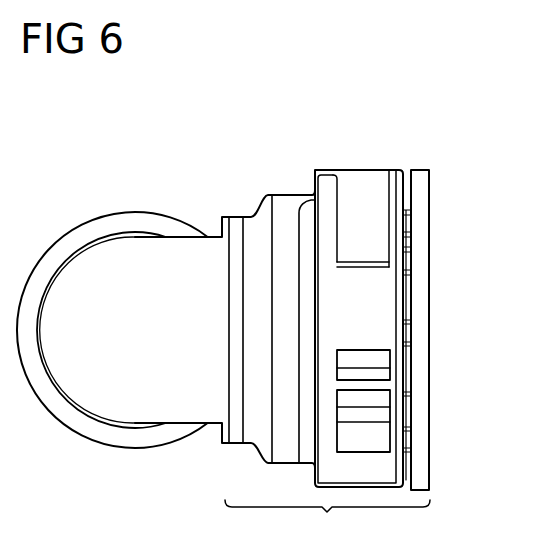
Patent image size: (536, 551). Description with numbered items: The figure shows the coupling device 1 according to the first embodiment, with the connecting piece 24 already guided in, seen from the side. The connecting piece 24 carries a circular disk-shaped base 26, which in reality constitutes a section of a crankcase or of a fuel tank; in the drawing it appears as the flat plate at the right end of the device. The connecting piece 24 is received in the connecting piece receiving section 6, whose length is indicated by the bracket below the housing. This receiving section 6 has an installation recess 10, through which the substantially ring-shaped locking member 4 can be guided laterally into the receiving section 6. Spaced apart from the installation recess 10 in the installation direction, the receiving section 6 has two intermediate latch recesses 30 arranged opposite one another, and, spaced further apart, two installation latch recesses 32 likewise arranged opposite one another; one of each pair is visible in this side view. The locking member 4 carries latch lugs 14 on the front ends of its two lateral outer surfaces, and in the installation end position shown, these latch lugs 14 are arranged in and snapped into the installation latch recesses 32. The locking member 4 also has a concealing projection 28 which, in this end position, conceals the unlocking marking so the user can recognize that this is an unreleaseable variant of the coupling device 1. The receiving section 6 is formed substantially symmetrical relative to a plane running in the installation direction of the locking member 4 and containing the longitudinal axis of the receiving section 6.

The coupling device 1 is at (67, 160).
The concealing projection 28 is at (338, 170).
The locking member 4 is at (365, 200).
The installation recess 10 is at (362, 268).
The circular disk-shaped base 26 is at (418, 195).
The connecting piece 24 is at (432, 297).
The intermediate latch recesses 30 is at (380, 360).
The latch lugs 14 is at (373, 415).
The installation latch recesses 32 is at (380, 442).
The connecting piece receiving section 6 is at (327, 523).